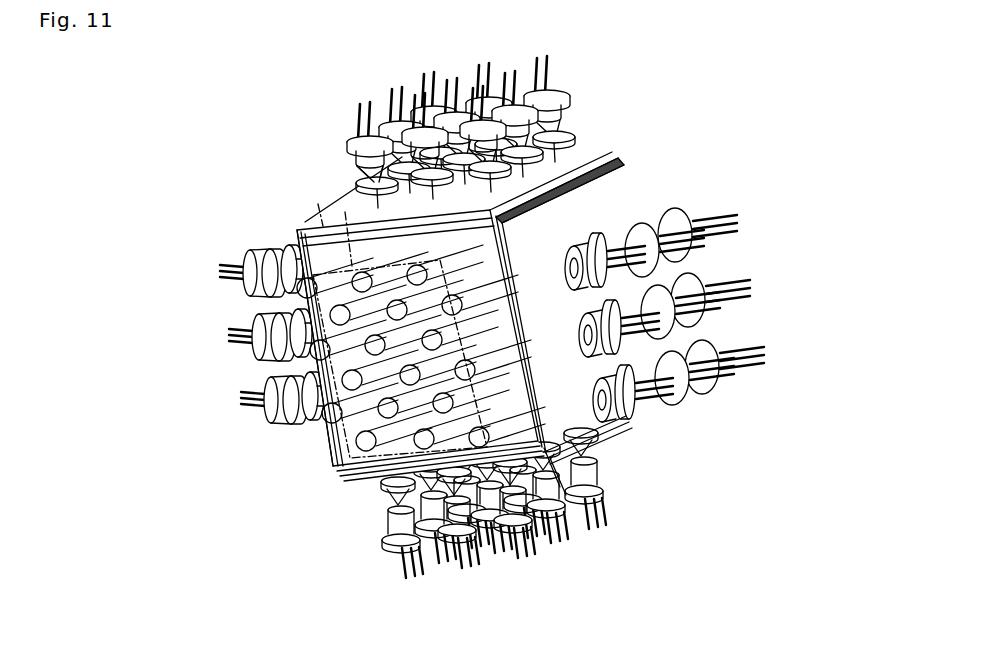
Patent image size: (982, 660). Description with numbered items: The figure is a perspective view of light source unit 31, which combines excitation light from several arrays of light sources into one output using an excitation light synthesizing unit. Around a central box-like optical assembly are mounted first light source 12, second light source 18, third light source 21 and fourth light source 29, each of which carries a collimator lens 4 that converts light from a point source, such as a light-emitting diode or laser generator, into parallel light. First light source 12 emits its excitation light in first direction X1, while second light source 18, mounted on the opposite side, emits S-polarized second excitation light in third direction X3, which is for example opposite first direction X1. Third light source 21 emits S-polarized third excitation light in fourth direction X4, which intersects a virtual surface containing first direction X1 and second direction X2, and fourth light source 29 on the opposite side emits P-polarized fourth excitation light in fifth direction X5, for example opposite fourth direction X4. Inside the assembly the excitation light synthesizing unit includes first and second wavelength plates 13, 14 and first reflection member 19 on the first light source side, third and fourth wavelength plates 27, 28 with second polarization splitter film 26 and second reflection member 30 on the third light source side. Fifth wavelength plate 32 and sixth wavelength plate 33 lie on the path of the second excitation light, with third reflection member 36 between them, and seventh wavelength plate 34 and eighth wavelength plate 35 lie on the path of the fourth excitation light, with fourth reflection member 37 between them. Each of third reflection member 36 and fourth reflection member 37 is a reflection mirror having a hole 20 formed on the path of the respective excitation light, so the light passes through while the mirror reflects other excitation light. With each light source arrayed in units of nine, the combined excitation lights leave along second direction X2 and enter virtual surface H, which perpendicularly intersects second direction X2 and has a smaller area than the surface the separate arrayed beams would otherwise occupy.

The collimator lens 4 is at (372, 178).
The first light source 12 is at (248, 268).
The first wavelength plate 13 is at (333, 468).
The second wavelength plate 14 is at (342, 470).
The second light source 18 is at (612, 238).
The first reflection member 19 is at (306, 298).
The hole 20 is at (316, 302).
The third light source 21 is at (403, 522).
The second polarization splitter film 26 is at (326, 306).
The third wavelength plate 27 is at (540, 464).
The fourth wavelength plate 28 is at (556, 474).
The fourth light source 29 is at (356, 140).
The second reflection member 30 is at (377, 478).
The light source unit 31 is at (755, 99).
The fifth wavelength plate 32 is at (586, 452).
The sixth wavelength plate 33 is at (566, 440).
The seventh wavelength plate 34 is at (611, 153).
The eighth wavelength plate 35 is at (600, 178).
The third reflection member 36 is at (556, 432).
The fourth reflection member 37 is at (592, 165).
The virtual surface H is at (399, 318).
The first direction X1 is at (202, 354).
The second direction X2 is at (193, 448).
The third direction X3 is at (700, 462).
The fourth direction X4 is at (469, 545).
The fifth direction X5 is at (366, 80).